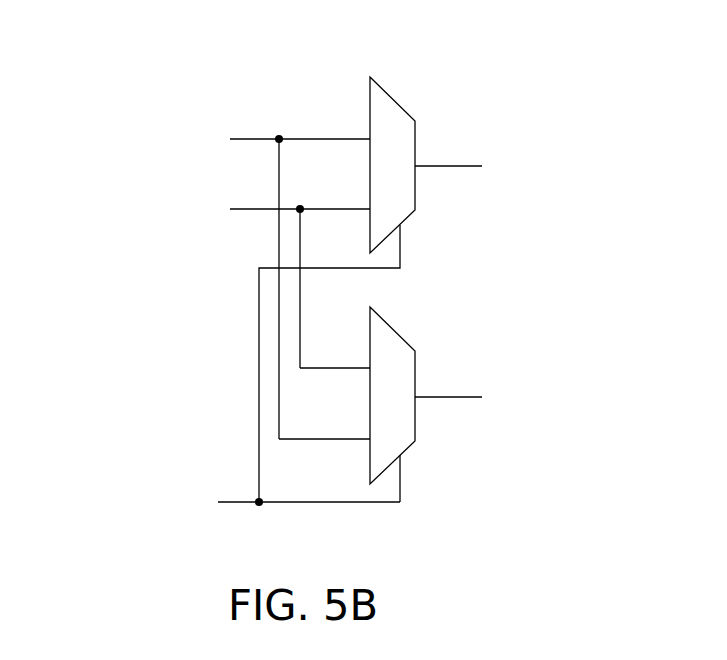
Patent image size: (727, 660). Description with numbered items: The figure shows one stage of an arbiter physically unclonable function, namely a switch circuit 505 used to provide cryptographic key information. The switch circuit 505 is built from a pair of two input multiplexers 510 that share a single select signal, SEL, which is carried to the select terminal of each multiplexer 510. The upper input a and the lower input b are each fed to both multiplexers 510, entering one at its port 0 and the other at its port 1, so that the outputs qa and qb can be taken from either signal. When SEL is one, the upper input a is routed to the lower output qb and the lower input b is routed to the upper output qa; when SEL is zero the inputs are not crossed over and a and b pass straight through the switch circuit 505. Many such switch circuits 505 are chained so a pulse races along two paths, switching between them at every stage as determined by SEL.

The switch circuit 505 is at (114, 95).
The two input multiplexer 510 is at (425, 133).
The multiplexer input port 0 is at (337, 259).
The multiplexer input port 1 is at (337, 323).